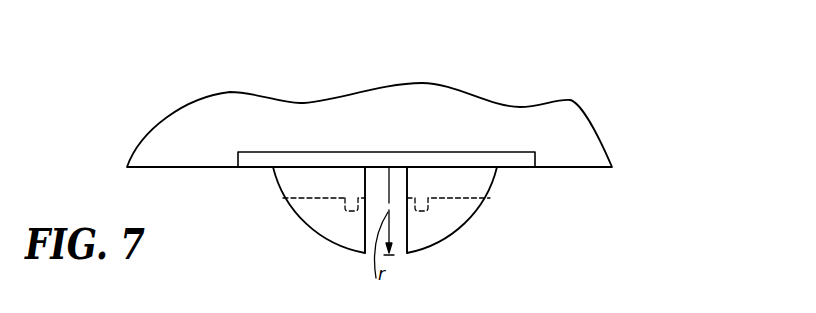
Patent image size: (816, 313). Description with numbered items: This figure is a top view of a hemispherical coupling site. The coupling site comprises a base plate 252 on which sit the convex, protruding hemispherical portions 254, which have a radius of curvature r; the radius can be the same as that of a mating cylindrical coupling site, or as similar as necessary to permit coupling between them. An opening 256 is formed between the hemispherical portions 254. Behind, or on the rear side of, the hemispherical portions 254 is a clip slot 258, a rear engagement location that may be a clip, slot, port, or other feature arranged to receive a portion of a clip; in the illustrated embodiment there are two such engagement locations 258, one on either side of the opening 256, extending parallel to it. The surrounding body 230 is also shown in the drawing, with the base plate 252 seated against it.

The cam body 230 is at (567, 127).
The base plate 252 is at (257, 160).
The protruding hemispherical portions 254 is at (292, 183).
The opening 256 is at (400, 176).
The clip slot 258 is at (350, 198).